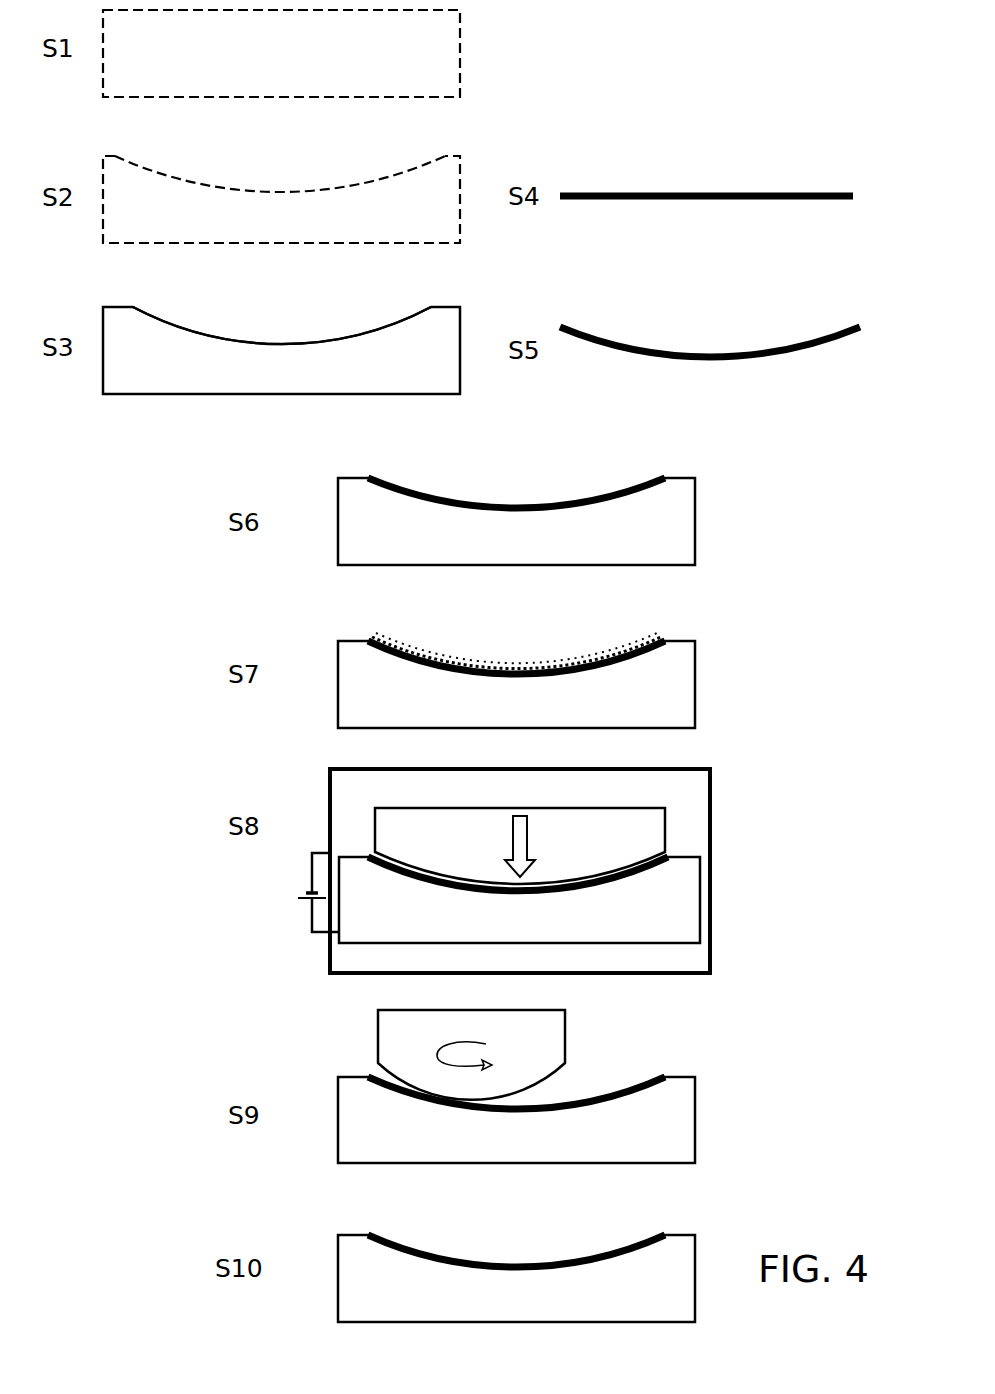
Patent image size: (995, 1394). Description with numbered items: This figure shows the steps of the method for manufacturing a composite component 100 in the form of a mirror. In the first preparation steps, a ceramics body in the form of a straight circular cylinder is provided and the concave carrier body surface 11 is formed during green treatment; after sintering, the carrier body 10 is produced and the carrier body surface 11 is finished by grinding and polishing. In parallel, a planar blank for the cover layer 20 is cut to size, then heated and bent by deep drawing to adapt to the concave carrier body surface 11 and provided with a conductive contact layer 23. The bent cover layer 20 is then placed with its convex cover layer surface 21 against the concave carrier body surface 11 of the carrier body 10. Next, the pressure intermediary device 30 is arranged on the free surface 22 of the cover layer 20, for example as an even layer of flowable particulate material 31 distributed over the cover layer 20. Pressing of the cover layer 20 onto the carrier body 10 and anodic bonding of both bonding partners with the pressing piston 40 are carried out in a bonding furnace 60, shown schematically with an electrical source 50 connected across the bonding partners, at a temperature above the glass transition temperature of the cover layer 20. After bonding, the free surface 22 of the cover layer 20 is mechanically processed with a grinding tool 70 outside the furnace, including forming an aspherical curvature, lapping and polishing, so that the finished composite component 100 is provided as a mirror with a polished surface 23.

The carrier body 10 is at (182, 378).
The carrier body surface 11 is at (280, 192).
The cover layer 20 is at (562, 328).
The cover layer surface 21 is at (764, 360).
The free surface 22 is at (475, 664).
The conductive contact layer 23 is at (682, 357).
The pressure intermediary device 30 is at (658, 641).
The flowable particulate material 31 is at (545, 663).
The pressing piston 40 is at (442, 833).
The power source 50 is at (300, 892).
The bonding furnace 60 is at (712, 790).
The grinding tool 70 is at (552, 1045).
The composite component 100 is at (402, 1303).